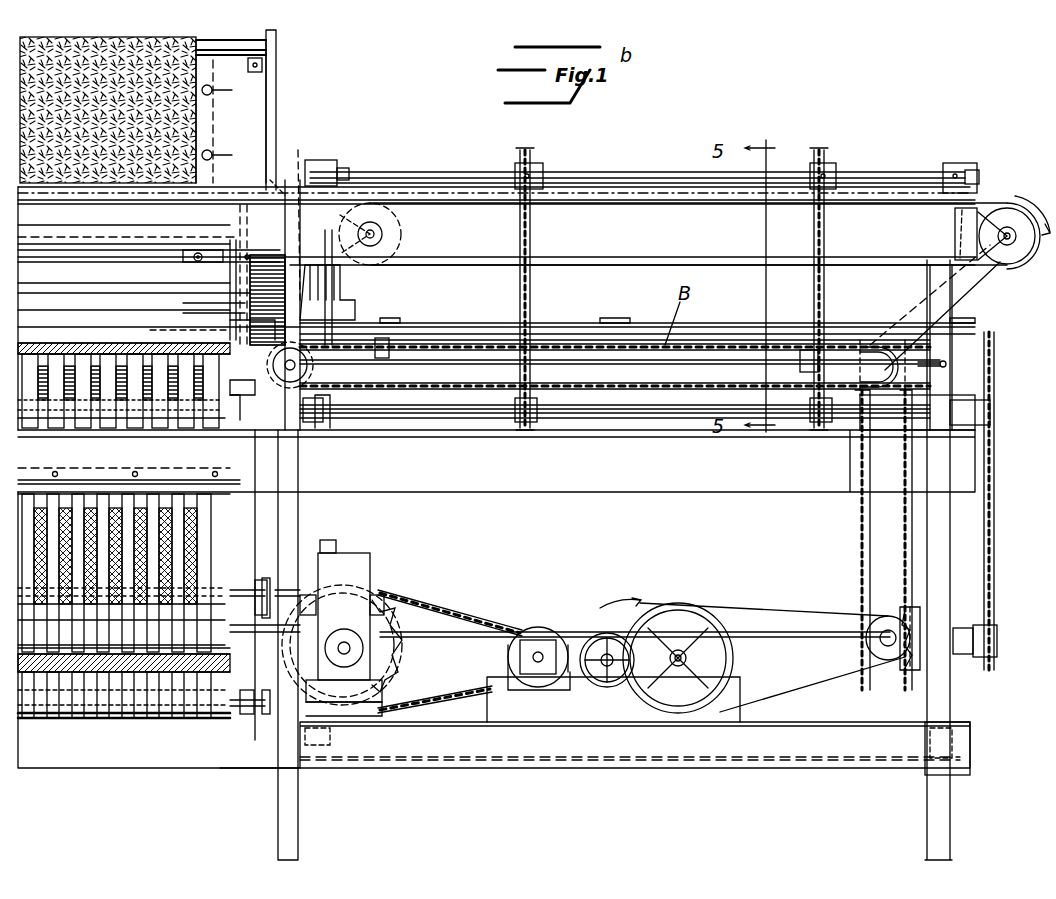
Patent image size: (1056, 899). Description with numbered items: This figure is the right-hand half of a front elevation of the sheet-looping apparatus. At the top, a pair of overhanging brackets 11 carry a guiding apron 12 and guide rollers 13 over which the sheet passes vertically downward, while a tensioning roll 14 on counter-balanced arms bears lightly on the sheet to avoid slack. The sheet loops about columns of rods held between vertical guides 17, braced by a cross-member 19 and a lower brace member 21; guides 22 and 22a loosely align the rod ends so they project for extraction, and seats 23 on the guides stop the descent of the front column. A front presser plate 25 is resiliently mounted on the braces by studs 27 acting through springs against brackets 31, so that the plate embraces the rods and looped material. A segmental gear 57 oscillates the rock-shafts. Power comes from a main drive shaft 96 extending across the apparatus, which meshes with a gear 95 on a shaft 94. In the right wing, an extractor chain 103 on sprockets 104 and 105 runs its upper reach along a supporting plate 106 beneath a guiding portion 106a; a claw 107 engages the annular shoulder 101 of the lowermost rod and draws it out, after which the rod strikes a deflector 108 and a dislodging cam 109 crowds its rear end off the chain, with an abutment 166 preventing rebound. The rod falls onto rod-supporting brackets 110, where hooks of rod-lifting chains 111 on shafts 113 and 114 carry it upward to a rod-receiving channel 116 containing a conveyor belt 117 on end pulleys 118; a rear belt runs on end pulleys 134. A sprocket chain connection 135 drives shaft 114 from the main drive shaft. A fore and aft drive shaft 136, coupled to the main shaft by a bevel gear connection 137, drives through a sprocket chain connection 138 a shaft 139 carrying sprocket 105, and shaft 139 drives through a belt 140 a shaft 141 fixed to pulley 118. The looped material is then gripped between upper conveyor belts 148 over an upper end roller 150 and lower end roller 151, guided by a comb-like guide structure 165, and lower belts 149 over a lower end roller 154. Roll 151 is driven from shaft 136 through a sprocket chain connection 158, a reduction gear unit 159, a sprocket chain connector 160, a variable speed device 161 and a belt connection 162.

The bracket 11 is at (272, 110).
The guiding apron 12 is at (246, 92).
The guide roller 13 is at (212, 48).
The tensioning roll 14 is at (118, 42).
The vertical guide 17 is at (244, 275).
The cross-member 19 is at (75, 250).
The brace member 21 is at (48, 302).
The guide 22 is at (300, 215).
The guide 22a is at (262, 300).
The seat 23 is at (232, 325).
The front presser plate 25 is at (30, 262).
The stud 27 is at (193, 267).
The bracket 31 is at (185, 310).
The segmental gear 57 is at (362, 284).
The shaft 94 is at (228, 585).
The gear 95 is at (328, 545).
The main drive shaft 96 is at (420, 632).
The annular shoulder 101 is at (950, 365).
The extractor chain 103 is at (524, 340).
The sprocket 104 is at (280, 392).
The sprocket 105 is at (878, 345).
The supporting plate 106 is at (780, 338).
The guiding portion 106a is at (592, 328).
The claw 107 is at (387, 358).
The deflector 108 is at (905, 352).
The dislodging cam 109 is at (700, 398).
The rod-supporting bracket 110 is at (775, 350).
The rod-lifting chain 111 is at (532, 290).
The upper shaft 113 is at (583, 172).
The shaft 114 is at (570, 425).
The rod-receiving channel 116 is at (442, 200).
The conveyor belt 117 is at (975, 205).
The end pulley 118 is at (985, 265).
The end pulley 134 is at (370, 220).
The sprocket chain connection 135 is at (994, 500).
The fore and aft drive shaft 136 is at (887, 640).
The bevel gear connection 137 is at (912, 672).
The sprocket chain connection 138 is at (868, 505).
The shaft 139 is at (860, 395).
The belt 140 is at (965, 320).
The shaft 141 is at (980, 236).
The upper conveyor belt 148 is at (118, 428).
The lower conveyor belt 149 is at (45, 718).
The upper end roller 150 is at (60, 352).
The lower end roller 151 is at (140, 718).
The lower end roller 154 is at (180, 720).
The sprocket chain connection 158 is at (270, 600).
The reduction gear unit 159 is at (352, 565).
The sprocket chain connector 160 is at (478, 628).
The variable speed device 161 is at (575, 710).
The belt connection 162 is at (812, 614).
The comb-like guide structure 165 is at (62, 420).
The abutment 166 is at (392, 345).